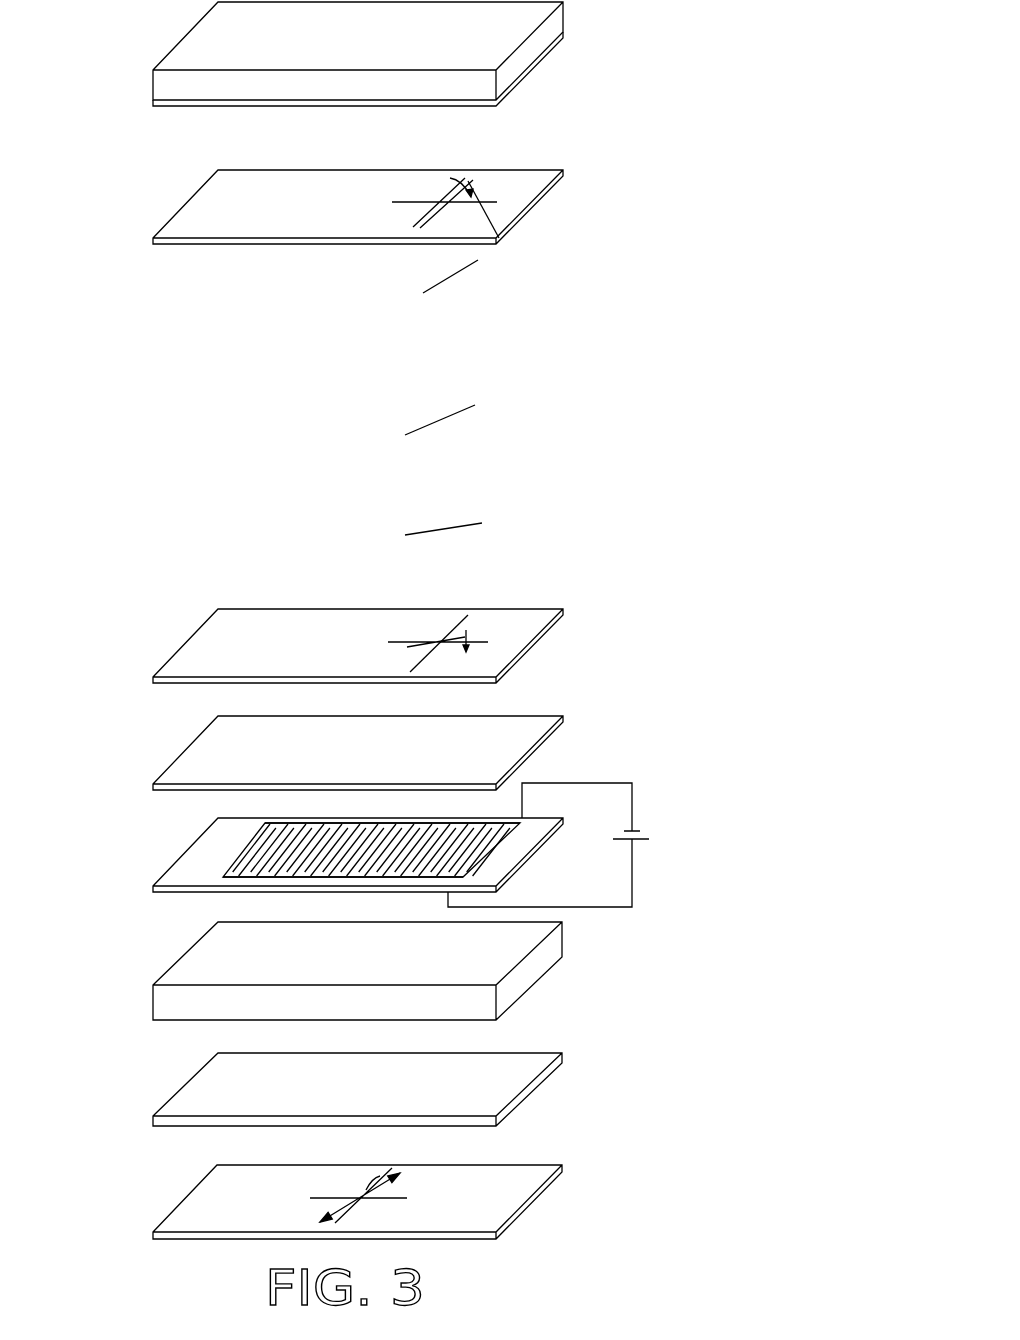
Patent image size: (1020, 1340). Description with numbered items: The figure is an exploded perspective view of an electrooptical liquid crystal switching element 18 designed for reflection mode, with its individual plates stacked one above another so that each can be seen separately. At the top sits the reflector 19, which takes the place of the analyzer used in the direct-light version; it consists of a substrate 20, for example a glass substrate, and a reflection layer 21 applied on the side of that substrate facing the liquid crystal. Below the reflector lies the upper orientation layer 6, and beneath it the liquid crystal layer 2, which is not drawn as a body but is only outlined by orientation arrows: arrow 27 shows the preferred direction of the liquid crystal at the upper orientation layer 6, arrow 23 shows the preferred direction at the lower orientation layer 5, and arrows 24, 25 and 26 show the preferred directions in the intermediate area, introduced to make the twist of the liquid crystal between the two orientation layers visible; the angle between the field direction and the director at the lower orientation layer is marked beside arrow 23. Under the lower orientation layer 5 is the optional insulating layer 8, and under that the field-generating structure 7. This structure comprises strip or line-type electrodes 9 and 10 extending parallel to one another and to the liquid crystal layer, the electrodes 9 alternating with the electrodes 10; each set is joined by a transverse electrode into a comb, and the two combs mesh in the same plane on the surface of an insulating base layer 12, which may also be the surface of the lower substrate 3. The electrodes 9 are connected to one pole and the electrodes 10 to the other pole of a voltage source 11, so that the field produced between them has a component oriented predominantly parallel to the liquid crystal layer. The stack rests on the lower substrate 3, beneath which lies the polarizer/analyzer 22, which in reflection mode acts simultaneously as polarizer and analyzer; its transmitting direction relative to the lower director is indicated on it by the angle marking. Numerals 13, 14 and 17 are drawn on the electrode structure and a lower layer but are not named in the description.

The liquid crystal layer 2 is at (302, 476).
The lower substrate 3 is at (520, 977).
The lower orientation layer 5 is at (392, 625).
The upper orientation layer 6 is at (386, 213).
The field-generating structure 7 is at (329, 857).
The insulating layer 8 is at (545, 740).
The strip or line-type electrodes 9 is at (262, 880).
The strip or line-type electrodes 10 is at (237, 855).
The voltage source 11 is at (640, 831).
The insulating base layer 12 is at (165, 880).
The electrode bus bar 13 is at (263, 877).
The electrode bus bar 14 is at (295, 823).
The alignment layer 17 is at (532, 1085).
The electrooptical liquid crystal switching element 18 is at (650, 409).
The reflector 19 is at (415, 67).
The substrate 20 is at (557, 22).
The reflection layer 21 is at (510, 93).
The polarizer/analyzer 22 is at (532, 1202).
The arrow 23 is at (472, 636).
The arrow 24 is at (446, 527).
The arrow 25 is at (450, 416).
The arrow 26 is at (462, 270).
The arrow 27 is at (499, 238).